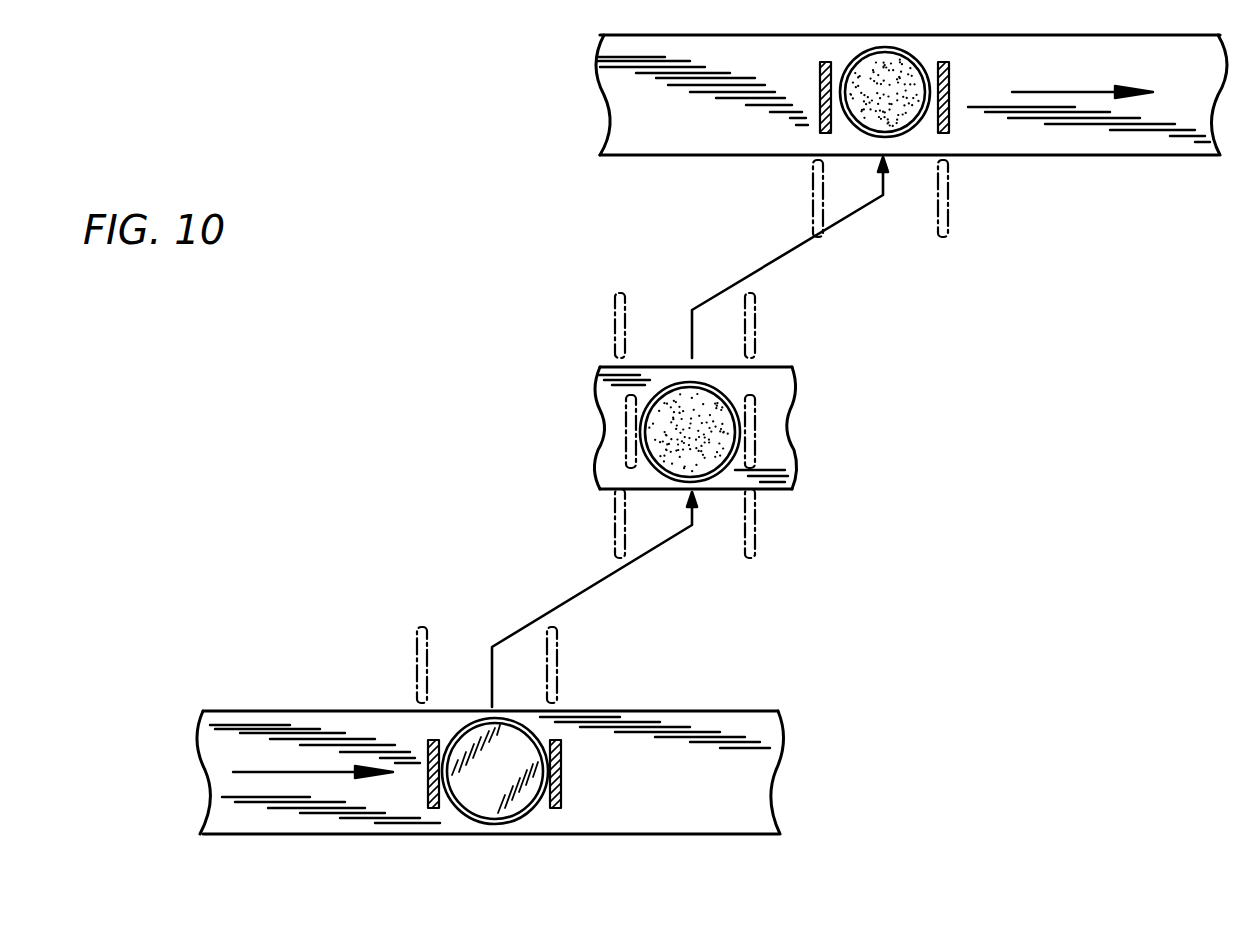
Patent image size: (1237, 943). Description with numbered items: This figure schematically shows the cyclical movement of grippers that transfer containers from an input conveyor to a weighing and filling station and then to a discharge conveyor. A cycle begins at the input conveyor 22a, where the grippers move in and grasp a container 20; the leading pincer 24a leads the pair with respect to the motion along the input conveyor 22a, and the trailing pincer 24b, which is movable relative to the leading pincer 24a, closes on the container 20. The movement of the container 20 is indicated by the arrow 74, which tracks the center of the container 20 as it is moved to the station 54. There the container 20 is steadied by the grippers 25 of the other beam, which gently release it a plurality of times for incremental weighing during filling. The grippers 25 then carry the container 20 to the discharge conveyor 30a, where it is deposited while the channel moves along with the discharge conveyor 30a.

The container 20 is at (524, 816).
The input conveyor 22a is at (333, 812).
The leading pincer 24a is at (758, 537).
The trailing pincer 24b is at (612, 538).
The gripper 25 is at (952, 73).
The discharge conveyor 30a is at (1165, 137).
The weighing and filling station 54 is at (708, 393).
The arrow 74 is at (600, 582).